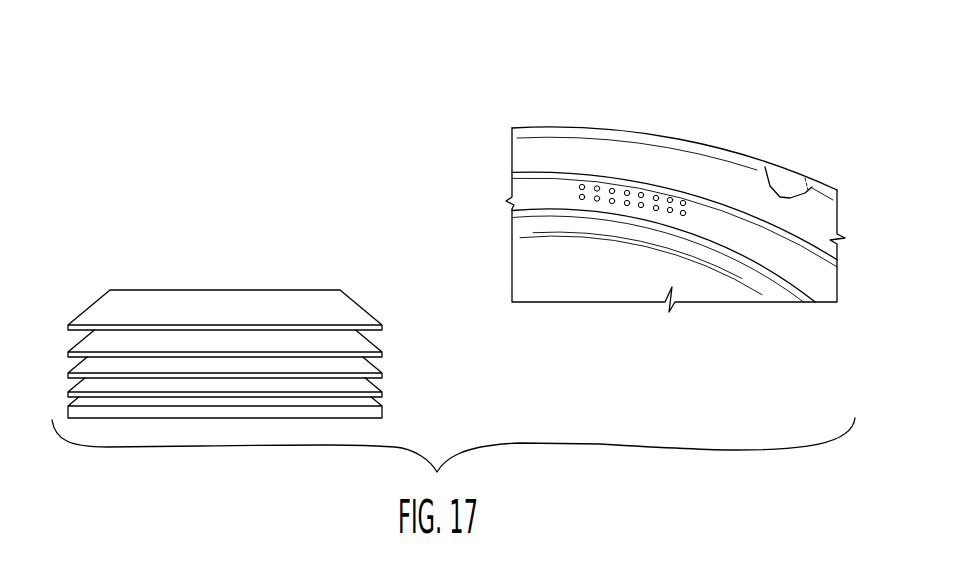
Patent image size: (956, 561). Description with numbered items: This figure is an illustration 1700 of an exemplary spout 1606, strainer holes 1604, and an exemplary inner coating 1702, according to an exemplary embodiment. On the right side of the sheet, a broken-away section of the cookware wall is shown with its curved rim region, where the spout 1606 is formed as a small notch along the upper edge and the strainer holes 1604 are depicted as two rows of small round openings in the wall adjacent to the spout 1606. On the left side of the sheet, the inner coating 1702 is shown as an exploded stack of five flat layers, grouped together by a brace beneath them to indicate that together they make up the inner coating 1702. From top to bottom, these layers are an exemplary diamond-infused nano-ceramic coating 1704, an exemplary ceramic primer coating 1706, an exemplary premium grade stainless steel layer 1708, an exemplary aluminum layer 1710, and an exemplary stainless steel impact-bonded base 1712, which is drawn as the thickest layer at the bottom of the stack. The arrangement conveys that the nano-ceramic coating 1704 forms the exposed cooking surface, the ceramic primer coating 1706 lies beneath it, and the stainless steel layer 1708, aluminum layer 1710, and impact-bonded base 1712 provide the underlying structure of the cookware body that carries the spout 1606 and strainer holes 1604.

The illustration 1700 is at (815, 54).
The inner coating 1702 is at (417, 158).
The strainer holes 1604 is at (598, 197).
The spout 1606 is at (787, 172).
The diamond-infused nano-ceramic coating 1704 is at (125, 302).
The ceramic primer coating 1706 is at (177, 338).
The premium grade stainless steel layer 1708 is at (230, 360).
The aluminum layer 1710 is at (277, 380).
The stainless steel impact-bonded base 1712 is at (327, 405).